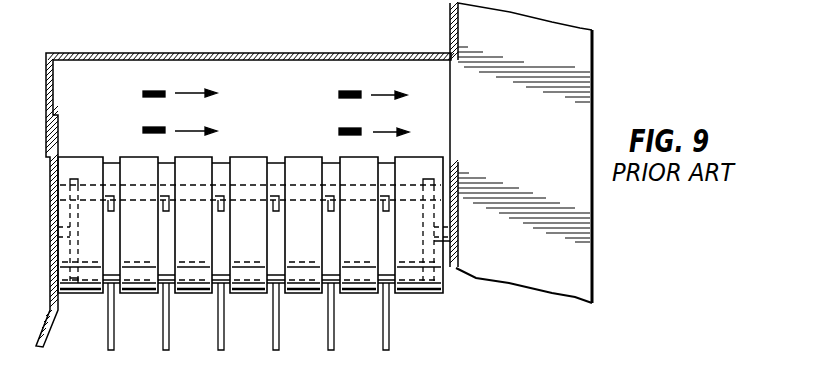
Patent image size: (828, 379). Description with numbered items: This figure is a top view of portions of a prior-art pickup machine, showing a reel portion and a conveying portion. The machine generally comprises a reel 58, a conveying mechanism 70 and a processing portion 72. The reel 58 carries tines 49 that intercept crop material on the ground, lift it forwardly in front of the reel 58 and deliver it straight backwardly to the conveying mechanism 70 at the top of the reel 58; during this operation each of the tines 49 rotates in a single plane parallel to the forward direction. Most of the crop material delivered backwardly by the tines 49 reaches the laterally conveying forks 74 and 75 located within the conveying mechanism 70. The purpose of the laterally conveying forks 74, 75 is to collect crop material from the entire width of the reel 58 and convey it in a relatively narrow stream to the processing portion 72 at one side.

The conveying mechanism 70 is at (272, 51).
The processing portion 72 is at (574, 256).
The laterally conveying fork 74 is at (339, 128).
The laterally conveying fork 75 is at (142, 128).
The reel 58 is at (458, 281).
The tines 49 is at (390, 329).